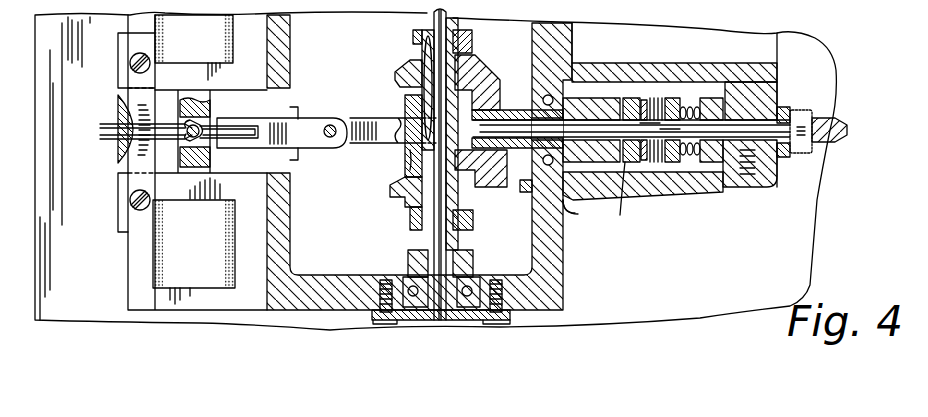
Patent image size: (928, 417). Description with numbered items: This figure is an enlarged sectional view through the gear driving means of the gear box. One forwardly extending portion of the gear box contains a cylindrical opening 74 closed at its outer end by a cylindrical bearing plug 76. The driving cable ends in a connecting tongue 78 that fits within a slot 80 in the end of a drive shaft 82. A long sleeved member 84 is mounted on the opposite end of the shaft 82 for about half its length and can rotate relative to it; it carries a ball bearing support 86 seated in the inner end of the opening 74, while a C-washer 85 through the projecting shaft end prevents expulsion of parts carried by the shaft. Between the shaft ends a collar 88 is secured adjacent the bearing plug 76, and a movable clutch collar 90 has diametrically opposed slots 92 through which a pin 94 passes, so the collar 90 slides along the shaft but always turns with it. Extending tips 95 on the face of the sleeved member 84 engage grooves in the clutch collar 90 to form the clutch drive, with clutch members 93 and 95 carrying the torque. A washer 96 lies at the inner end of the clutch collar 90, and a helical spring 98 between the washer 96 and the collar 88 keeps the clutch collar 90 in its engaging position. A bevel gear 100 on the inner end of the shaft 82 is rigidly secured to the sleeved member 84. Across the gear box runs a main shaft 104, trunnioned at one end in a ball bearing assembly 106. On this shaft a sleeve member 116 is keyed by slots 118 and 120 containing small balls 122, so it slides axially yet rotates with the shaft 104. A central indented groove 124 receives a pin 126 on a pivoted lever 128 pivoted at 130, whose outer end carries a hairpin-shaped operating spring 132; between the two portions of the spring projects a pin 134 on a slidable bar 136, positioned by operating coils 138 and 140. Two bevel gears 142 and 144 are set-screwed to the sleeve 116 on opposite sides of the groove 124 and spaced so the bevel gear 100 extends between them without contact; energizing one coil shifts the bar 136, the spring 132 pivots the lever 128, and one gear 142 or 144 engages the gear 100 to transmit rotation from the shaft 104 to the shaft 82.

The cylindrical opening 74 is at (660, 105).
The cylindrical bearing plug 76 is at (767, 100).
The connecting tongue 78 is at (774, 160).
The slot 80 is at (760, 82).
The drive shaft 82 is at (708, 100).
The sleeved member 84 is at (578, 100).
The C-washer 85 is at (528, 186).
The ball bearing support 86 is at (580, 214).
The collar 88 is at (710, 162).
The movable clutch collar 90 is at (632, 98).
The diametrically opposed slots 92 is at (645, 100).
The clutch member 93 is at (614, 197).
The pin 94 is at (660, 162).
The extending tips 95 is at (625, 100).
The washer 96 is at (690, 103).
The helical spring 98 is at (683, 162).
The bevel gear 100 is at (488, 80).
The main shaft 104 is at (434, 247).
The ball bearing assembly 106 is at (400, 279).
The sleeve member 116 is at (420, 163).
The slot 118 is at (411, 215).
The slot 120 is at (418, 48).
The small balls 122 is at (413, 62).
The indented groove 124 is at (427, 117).
The pin 126 is at (416, 153).
The pivoted lever 128 is at (305, 144).
The pivot 130 is at (331, 124).
The operating spring 132 is at (112, 122).
The pin 134 is at (200, 127).
The slidable bar 136 is at (212, 157).
The operating coil 138 is at (180, 47).
The operating coil 140 is at (152, 263).
The bevel gear 142 is at (500, 203).
The bevel gear 144 is at (470, 58).